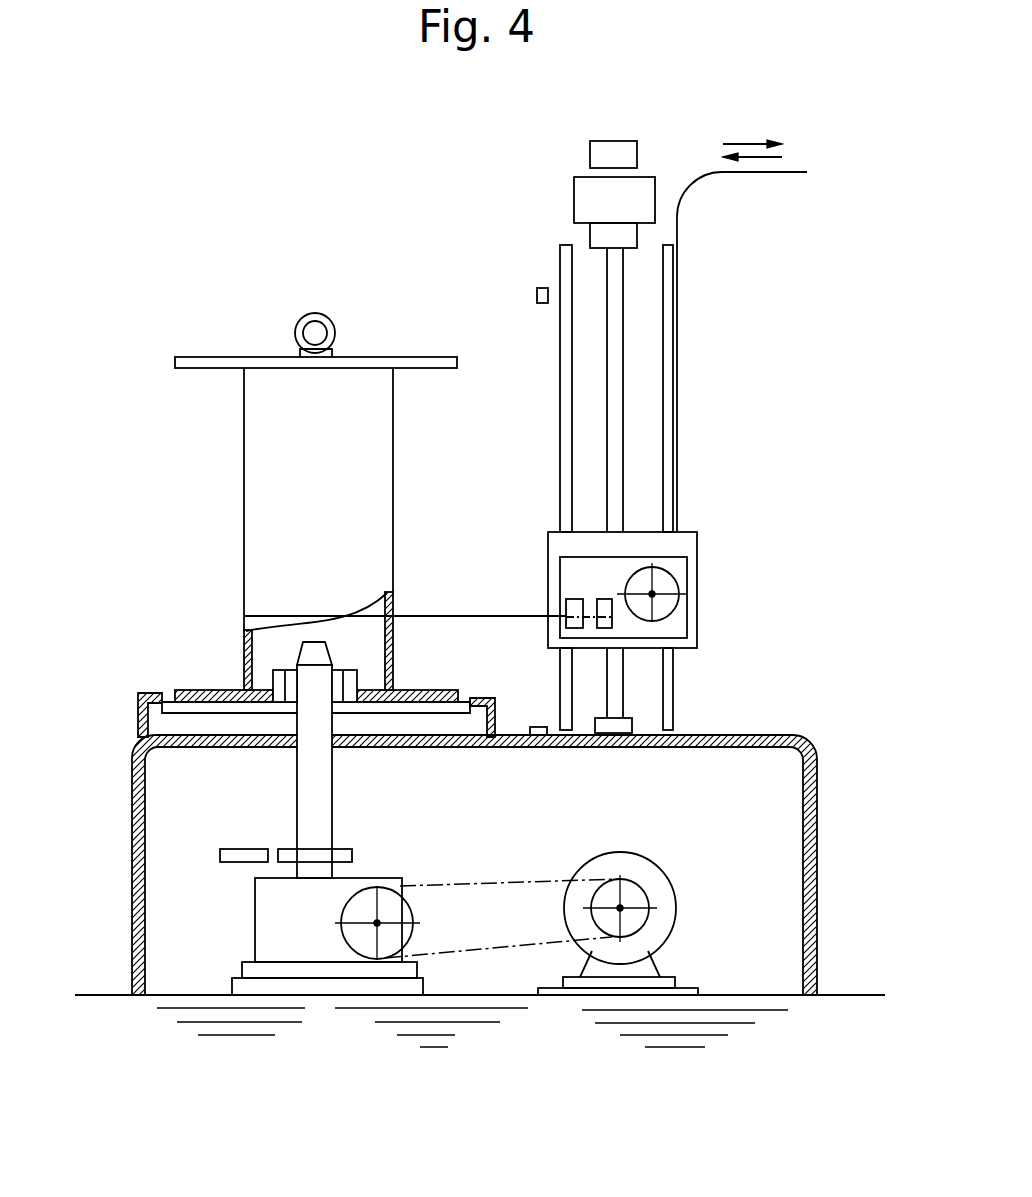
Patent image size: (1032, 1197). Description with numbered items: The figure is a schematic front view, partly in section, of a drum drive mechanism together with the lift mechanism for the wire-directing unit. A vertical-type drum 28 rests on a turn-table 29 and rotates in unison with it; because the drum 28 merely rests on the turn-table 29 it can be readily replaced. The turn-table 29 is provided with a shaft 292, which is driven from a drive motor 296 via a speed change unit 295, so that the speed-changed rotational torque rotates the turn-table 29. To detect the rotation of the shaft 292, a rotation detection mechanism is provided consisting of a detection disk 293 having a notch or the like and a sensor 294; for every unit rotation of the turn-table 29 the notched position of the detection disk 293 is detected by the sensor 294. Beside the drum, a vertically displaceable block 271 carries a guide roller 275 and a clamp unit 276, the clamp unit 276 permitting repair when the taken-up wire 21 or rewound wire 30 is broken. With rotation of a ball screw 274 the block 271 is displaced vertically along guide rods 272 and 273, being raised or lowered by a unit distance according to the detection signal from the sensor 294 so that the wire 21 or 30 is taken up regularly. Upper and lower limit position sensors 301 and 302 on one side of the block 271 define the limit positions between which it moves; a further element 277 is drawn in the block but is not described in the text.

The taken-up wire 21 is at (423, 615).
The rewound wire 30 is at (428, 584).
The drum 28 is at (258, 480).
The turn-table 29 is at (192, 707).
The vertically displaceable block 271 is at (673, 543).
The guide rod 272 is at (563, 365).
The guide rod 273 is at (668, 308).
The ball screw 274 is at (622, 358).
The guide roller 275 is at (667, 587).
The clamp unit 276 is at (613, 619).
The wire guide 277 is at (566, 608).
The shaft 292 is at (303, 798).
The detection disk 293 is at (350, 848).
The sensor 294 is at (230, 849).
The speed change unit 295 is at (267, 923).
The drive motor 296 is at (658, 923).
The upper limit position sensor 301 is at (537, 295).
The lower limit position sensor 302 is at (537, 727).